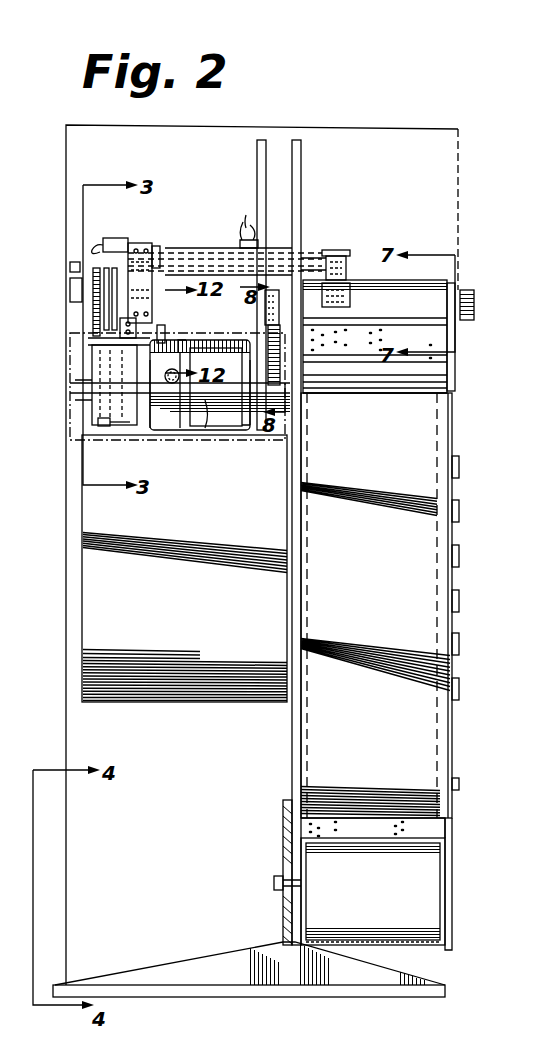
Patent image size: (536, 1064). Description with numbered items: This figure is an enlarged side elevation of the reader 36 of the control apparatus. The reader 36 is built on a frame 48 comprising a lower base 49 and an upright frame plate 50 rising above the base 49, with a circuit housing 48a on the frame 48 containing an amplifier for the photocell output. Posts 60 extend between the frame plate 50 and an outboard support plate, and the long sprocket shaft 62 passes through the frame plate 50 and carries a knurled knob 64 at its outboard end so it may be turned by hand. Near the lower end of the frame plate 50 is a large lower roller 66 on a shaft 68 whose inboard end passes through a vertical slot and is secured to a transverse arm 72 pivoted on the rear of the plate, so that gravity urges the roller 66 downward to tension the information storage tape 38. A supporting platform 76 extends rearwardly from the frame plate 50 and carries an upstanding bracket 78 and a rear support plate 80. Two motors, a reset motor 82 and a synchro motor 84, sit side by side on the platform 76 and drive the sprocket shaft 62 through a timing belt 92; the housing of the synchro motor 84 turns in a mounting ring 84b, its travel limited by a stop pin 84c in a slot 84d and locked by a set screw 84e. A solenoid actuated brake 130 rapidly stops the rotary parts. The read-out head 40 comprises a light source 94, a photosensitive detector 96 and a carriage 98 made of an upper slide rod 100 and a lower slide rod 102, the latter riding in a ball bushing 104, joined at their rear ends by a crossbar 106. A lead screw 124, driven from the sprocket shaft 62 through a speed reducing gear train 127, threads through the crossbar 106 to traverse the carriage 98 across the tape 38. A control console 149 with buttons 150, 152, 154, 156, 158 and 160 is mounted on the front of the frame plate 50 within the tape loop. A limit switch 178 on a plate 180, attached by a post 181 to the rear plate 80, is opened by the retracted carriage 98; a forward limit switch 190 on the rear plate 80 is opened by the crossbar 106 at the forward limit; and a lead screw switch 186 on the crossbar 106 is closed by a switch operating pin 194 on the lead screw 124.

The reader 36 is at (428, 125).
The information storage tape 38 is at (412, 836).
The read-out head 40 is at (355, 247).
The frame 48 is at (172, 1000).
The circuit housing 48a is at (184, 568).
The base 49 is at (244, 997).
The frame plate 50 is at (292, 514).
The posts 60 is at (376, 380).
The sprocket shaft 62 is at (365, 324).
The knurled knob 64 is at (467, 292).
The lower roller 66 is at (425, 878).
The lower roller shaft 68 is at (278, 876).
The transverse arm 72 is at (280, 892).
The supporting platform 76 is at (130, 445).
The platform bracket 78 is at (92, 380).
The rear support plate 80 is at (257, 148).
The reset motor 82 is at (246, 430).
The synchro motor 84 is at (238, 430).
The mounting ring 84b is at (208, 430).
The stop pin 84c is at (182, 340).
The slot 84d is at (240, 334).
The set screw 84e is at (179, 378).
The timing belt 92 is at (93, 296).
The light source 94 is at (350, 265).
The photosensitive detector 96 is at (354, 295).
The carriage 98 is at (147, 243).
The upper slide rod 100 is at (204, 252).
The lower slide rod 102 is at (178, 316).
The ball bushing 104 is at (303, 260).
The crossbar 106 is at (156, 246).
The lead screw 124 is at (262, 305).
The speed reducing gear train 127 is at (285, 378).
The solenoid actuated brake 130 is at (92, 419).
The control console 149 is at (455, 422).
The main power button 150 is at (459, 468).
The reset motor control button 152 is at (459, 512).
The synchro lock button 154 is at (459, 557).
The synchro unlock button 156 is at (459, 602).
The control button 158 is at (459, 646).
The control button 160 is at (459, 692).
The limit switch 178 is at (115, 238).
The switch supporting plate 180 is at (70, 265).
The supporting post 181 is at (70, 282).
The lead screw switch 186 is at (118, 345).
The forward limit switch 190 is at (244, 218).
The switch operating pin 194 is at (120, 330).